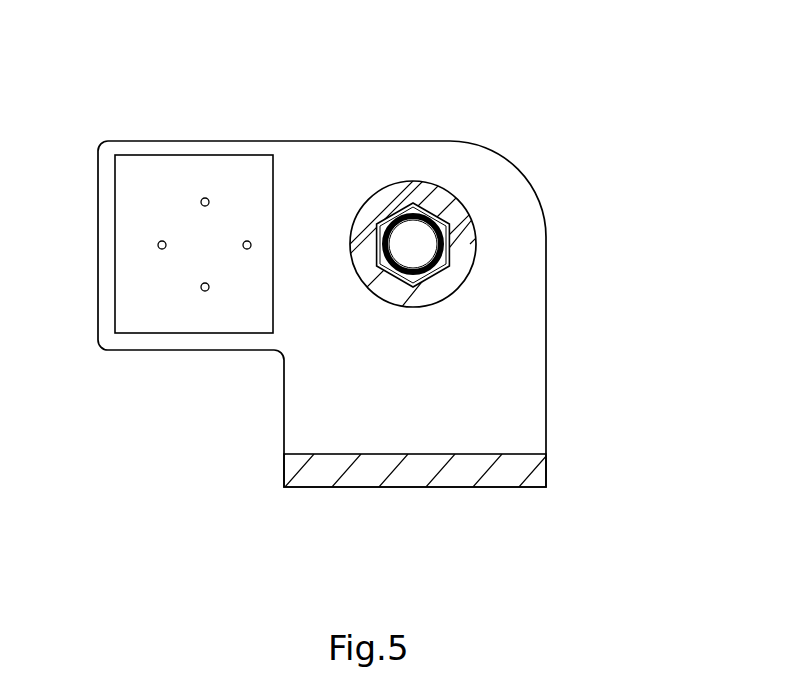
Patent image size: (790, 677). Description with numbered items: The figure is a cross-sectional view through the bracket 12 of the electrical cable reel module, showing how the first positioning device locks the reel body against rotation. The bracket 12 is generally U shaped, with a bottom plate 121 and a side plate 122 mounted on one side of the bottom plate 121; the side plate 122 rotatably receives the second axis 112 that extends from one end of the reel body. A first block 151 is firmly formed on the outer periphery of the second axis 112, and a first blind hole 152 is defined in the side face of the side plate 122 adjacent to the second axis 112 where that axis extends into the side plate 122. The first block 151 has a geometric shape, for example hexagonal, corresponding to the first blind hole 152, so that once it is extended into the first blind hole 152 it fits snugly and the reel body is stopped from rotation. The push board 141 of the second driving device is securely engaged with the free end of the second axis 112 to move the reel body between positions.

The bracket 12 is at (198, 433).
The second axis 112 is at (405, 240).
The bottom plate 121 is at (366, 476).
The side plate 122 is at (517, 327).
The push board 141 is at (477, 235).
The first block 151 is at (443, 262).
The first blind hole 152 is at (414, 203).